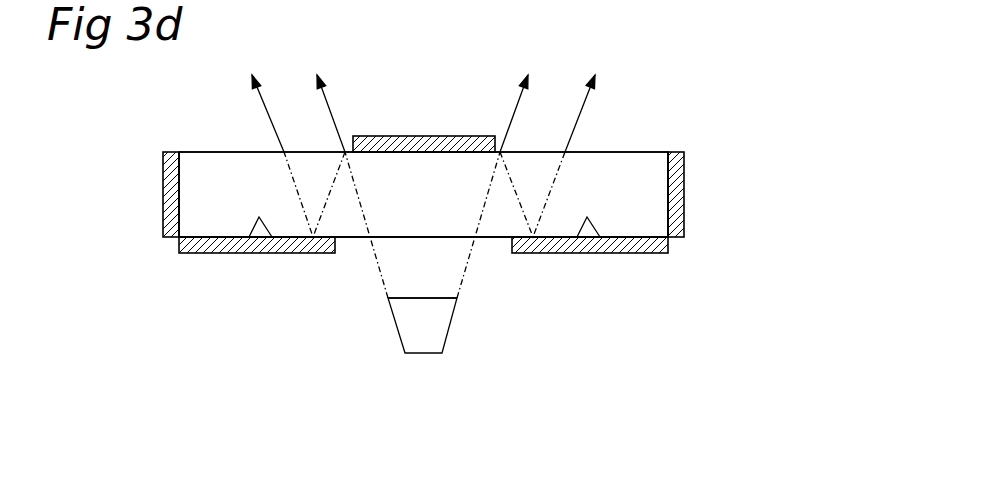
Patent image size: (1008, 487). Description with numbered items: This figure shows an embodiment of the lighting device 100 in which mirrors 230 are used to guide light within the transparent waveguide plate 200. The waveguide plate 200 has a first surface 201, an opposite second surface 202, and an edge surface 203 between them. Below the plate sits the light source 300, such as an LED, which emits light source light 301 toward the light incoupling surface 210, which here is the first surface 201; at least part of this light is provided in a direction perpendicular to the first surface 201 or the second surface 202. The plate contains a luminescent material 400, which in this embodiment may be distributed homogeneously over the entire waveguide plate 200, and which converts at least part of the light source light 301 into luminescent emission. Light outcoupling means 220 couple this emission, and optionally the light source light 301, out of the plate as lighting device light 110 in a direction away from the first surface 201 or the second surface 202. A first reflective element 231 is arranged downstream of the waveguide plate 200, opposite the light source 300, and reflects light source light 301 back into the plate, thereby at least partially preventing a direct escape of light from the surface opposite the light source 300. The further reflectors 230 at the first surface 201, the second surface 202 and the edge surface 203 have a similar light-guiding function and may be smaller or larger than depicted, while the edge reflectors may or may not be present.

The lighting device 100 is at (423, 186).
The out-coupled light 110 is at (265, 107).
The transparent waveguide plate 200 is at (474, 283).
The first surface 201 is at (497, 240).
The second surface 202 is at (600, 152).
The edge surface 203 is at (172, 212).
The light incoupling surface 210 is at (402, 240).
The light outcoupling means 220 is at (255, 237).
The mirrors 230 is at (163, 177).
The first reflective element 231 is at (447, 136).
The light source 300 is at (399, 343).
The light source light 301 is at (398, 270).
The luminescent material 400 is at (460, 198).